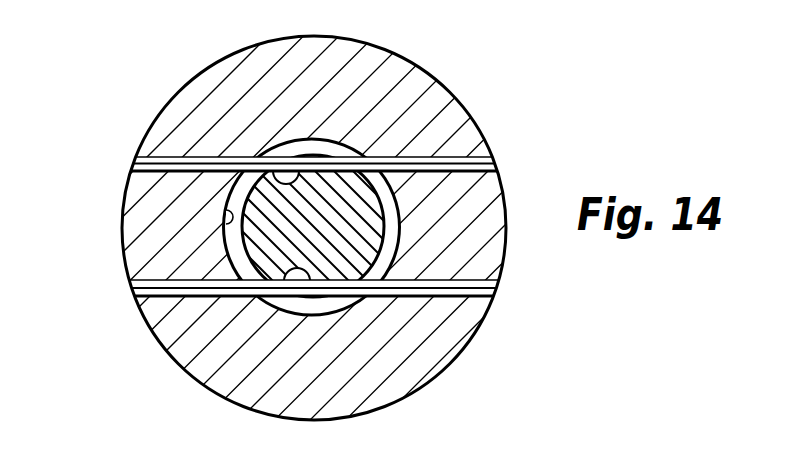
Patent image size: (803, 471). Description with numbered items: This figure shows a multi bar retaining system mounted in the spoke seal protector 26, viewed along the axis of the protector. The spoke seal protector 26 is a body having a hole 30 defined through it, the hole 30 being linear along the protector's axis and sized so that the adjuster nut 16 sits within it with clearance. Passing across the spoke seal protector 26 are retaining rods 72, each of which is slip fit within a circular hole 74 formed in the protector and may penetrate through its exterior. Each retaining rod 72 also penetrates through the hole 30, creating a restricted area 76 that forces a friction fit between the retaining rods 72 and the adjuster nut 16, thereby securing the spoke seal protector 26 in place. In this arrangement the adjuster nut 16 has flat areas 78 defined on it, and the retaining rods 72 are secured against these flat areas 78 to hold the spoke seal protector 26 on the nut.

The adjuster nut 16 is at (230, 198).
The spoke seal protector 26 is at (460, 102).
The hole 30 is at (226, 224).
The retaining rod 72 is at (493, 160).
The circular hole 74 is at (130, 163).
The restricted area 76 is at (272, 178).
The flat areas 78 is at (316, 172).